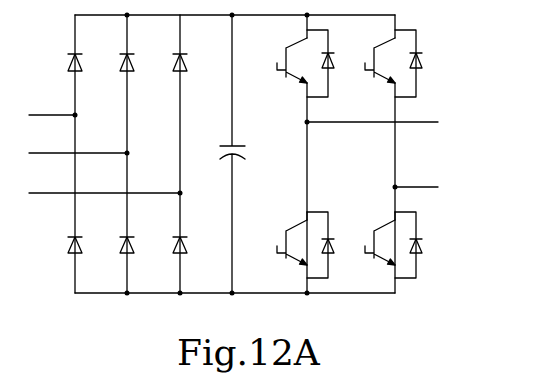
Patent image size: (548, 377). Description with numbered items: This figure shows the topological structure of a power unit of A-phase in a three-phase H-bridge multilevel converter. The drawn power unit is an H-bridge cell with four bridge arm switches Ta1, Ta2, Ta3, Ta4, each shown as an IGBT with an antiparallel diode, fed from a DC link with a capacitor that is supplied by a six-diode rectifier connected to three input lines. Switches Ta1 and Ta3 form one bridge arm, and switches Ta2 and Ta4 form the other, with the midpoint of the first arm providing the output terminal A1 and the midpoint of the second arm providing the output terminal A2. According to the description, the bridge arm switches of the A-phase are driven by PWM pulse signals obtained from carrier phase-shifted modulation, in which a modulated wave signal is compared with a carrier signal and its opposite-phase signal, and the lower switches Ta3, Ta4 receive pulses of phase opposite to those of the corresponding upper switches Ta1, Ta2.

The IGBT switch Ta1 is at (294, 63).
The IGBT switch Ta2 is at (381, 63).
The IGBT switch Ta3 is at (293, 245).
The IGBT switch Ta4 is at (381, 245).
The output terminal A1 is at (357, 122).
The output terminal A2 is at (400, 187).